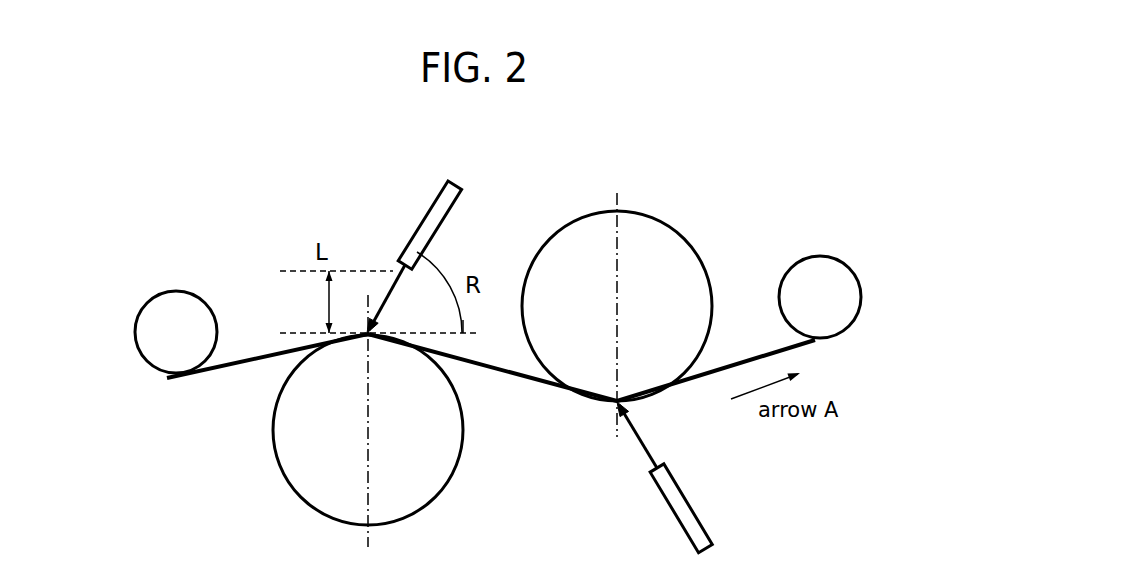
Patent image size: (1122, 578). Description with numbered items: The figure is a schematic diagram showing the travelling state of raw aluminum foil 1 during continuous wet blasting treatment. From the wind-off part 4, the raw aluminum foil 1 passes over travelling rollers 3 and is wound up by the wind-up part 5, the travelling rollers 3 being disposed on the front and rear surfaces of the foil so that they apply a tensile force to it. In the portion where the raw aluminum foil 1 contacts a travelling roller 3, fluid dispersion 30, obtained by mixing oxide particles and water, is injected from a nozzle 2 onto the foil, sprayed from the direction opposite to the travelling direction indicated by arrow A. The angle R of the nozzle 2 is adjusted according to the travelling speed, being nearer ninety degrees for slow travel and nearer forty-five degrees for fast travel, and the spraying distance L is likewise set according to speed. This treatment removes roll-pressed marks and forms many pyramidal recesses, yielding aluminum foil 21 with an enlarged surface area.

The raw aluminum foil 1 is at (248, 368).
The nozzle 2 is at (427, 223).
The travelling roller 3 is at (317, 483).
The wind-off part 4 is at (176, 312).
The wind-up part 5 is at (808, 273).
The aluminum foil 21 is at (731, 365).
The fluid dispersion 30 is at (385, 290).